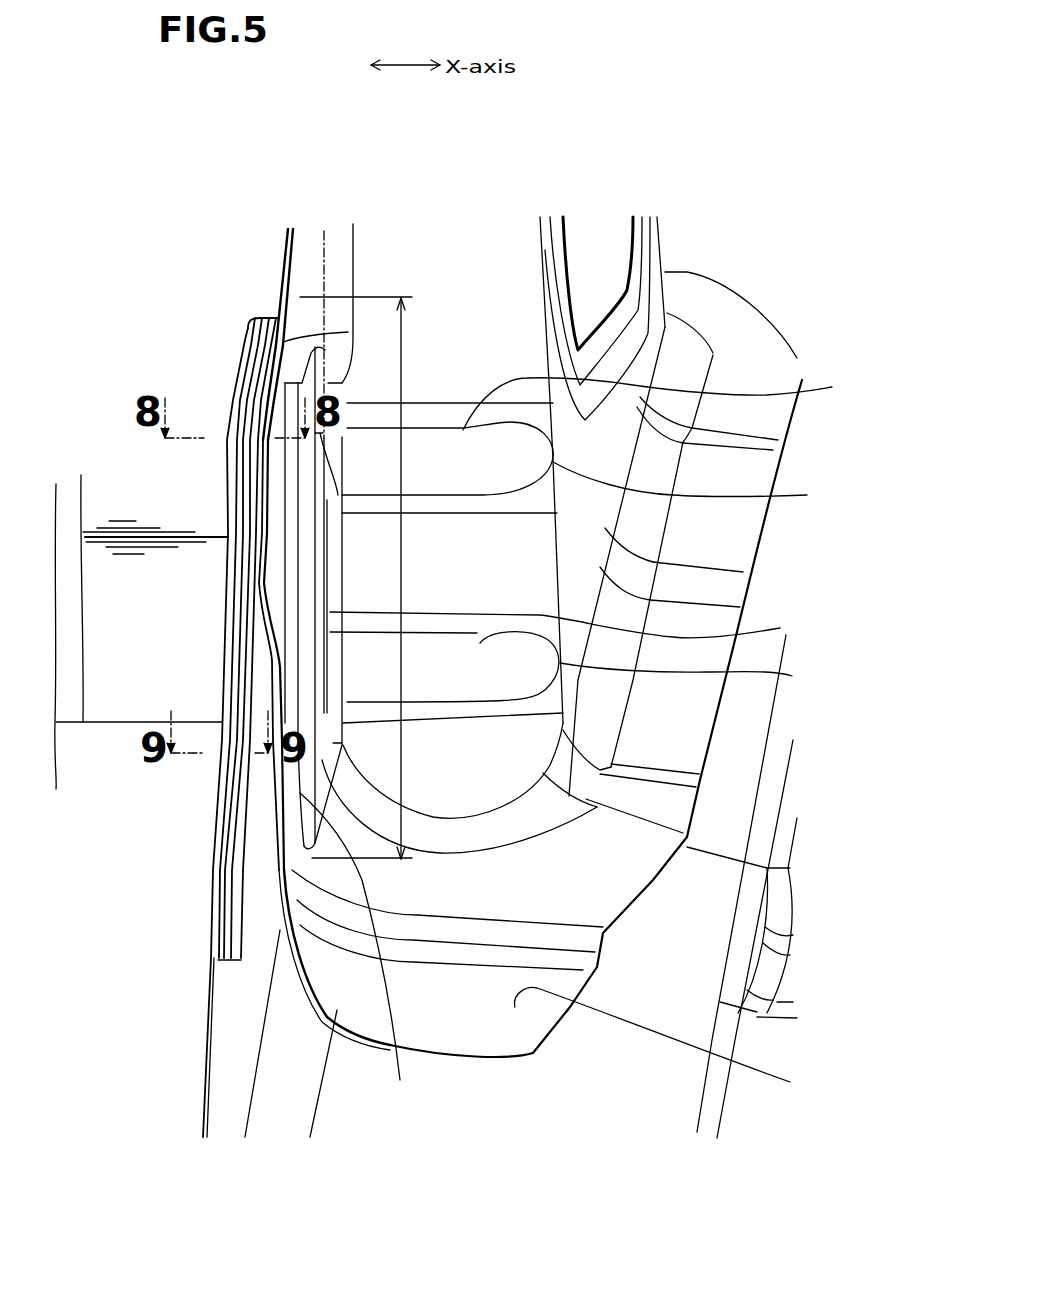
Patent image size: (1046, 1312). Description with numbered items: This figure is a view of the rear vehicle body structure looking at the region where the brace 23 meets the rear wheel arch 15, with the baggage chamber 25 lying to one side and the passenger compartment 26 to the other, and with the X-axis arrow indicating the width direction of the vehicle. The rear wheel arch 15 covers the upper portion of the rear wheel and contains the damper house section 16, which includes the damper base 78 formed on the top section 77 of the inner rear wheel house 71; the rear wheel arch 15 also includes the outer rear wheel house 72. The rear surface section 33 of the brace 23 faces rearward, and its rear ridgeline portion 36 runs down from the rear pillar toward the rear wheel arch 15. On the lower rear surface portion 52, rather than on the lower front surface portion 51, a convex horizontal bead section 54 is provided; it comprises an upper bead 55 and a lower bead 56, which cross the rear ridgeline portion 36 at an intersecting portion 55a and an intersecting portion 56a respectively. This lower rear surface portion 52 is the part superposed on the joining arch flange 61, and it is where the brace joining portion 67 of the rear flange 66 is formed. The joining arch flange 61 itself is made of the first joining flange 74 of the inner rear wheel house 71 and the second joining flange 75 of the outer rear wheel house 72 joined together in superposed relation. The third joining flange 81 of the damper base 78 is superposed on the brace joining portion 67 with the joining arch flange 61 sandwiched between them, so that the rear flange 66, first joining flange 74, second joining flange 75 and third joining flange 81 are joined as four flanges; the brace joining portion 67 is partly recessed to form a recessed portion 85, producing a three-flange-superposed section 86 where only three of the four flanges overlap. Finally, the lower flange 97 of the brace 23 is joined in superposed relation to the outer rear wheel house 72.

The rear wheel arch 15 is at (188, 262).
The damper house section 16 is at (113, 437).
The brace 23 is at (500, 210).
The baggage chamber 25 is at (181, 171).
The passenger compartment 26 is at (836, 127).
The rear surface section 33 is at (442, 261).
The rear ridgeline portion 36 is at (545, 300).
The lower front surface portion 51 is at (660, 258).
The lower rear surface portion 52 is at (540, 540).
The horizontal bead section 54 is at (562, 458).
The upper bead 55 is at (661, 401).
The intersecting portion 55a is at (705, 486).
The lower bead 56 is at (569, 875).
The intersecting portion 56a is at (590, 677).
The joining arch flange 61 is at (118, 958).
The rear flange 66 is at (303, 253).
The brace joining portion 67 is at (402, 468).
The inner rear wheel house 71 is at (106, 771).
The outer rear wheel house 72 is at (500, 1120).
The first joining flange 74 is at (225, 962).
The second joining flange 75 is at (212, 1063).
The top section 77 is at (160, 356).
The damper base 78 is at (81, 475).
The third joining flange 81 is at (243, 393).
The recessed portion 85 is at (275, 686).
The three-flange-superposed section 86 is at (368, 1021).
The lower flange 97 is at (670, 1040).